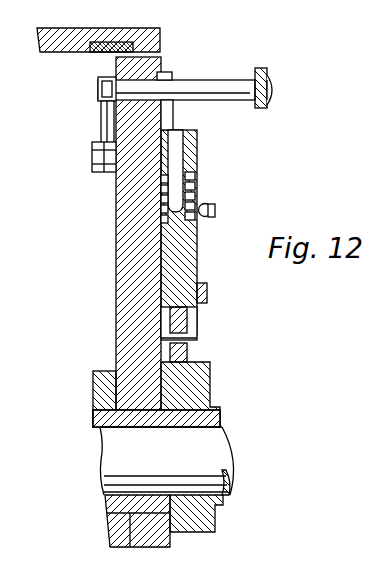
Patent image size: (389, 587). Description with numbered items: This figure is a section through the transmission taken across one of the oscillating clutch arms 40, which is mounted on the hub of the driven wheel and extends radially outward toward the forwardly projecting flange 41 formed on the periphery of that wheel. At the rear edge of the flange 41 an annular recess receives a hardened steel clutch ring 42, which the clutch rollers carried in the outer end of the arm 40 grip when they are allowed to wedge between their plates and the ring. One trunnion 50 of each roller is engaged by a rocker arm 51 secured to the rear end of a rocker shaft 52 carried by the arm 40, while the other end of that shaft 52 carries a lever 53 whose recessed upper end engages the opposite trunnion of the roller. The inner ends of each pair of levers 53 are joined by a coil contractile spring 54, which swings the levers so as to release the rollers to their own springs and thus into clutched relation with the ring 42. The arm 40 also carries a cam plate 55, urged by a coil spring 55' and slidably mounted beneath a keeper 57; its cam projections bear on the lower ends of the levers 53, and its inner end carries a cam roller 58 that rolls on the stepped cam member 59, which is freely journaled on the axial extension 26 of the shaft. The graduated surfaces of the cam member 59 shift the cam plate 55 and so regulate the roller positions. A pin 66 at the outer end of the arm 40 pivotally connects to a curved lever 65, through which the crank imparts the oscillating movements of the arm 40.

The axial extension 26 is at (223, 450).
The clutch arm 40 is at (97, 370).
The flange 41 is at (160, 35).
The clutch ring 42 is at (125, 16).
The trunnion 50 is at (99, 88).
The rocker arm 51 is at (103, 118).
The rocker shaft 52 is at (92, 153).
The lever 53 is at (170, 75).
The coil contractile spring 54 is at (210, 203).
The cam plate 55 is at (206, 220).
The coil spring 55' is at (203, 176).
The keeper 57 is at (207, 297).
The cam roller 58 is at (188, 362).
The stepped cam member 59 is at (208, 403).
The curved lever 65 is at (270, 105).
The pin 66 is at (233, 80).